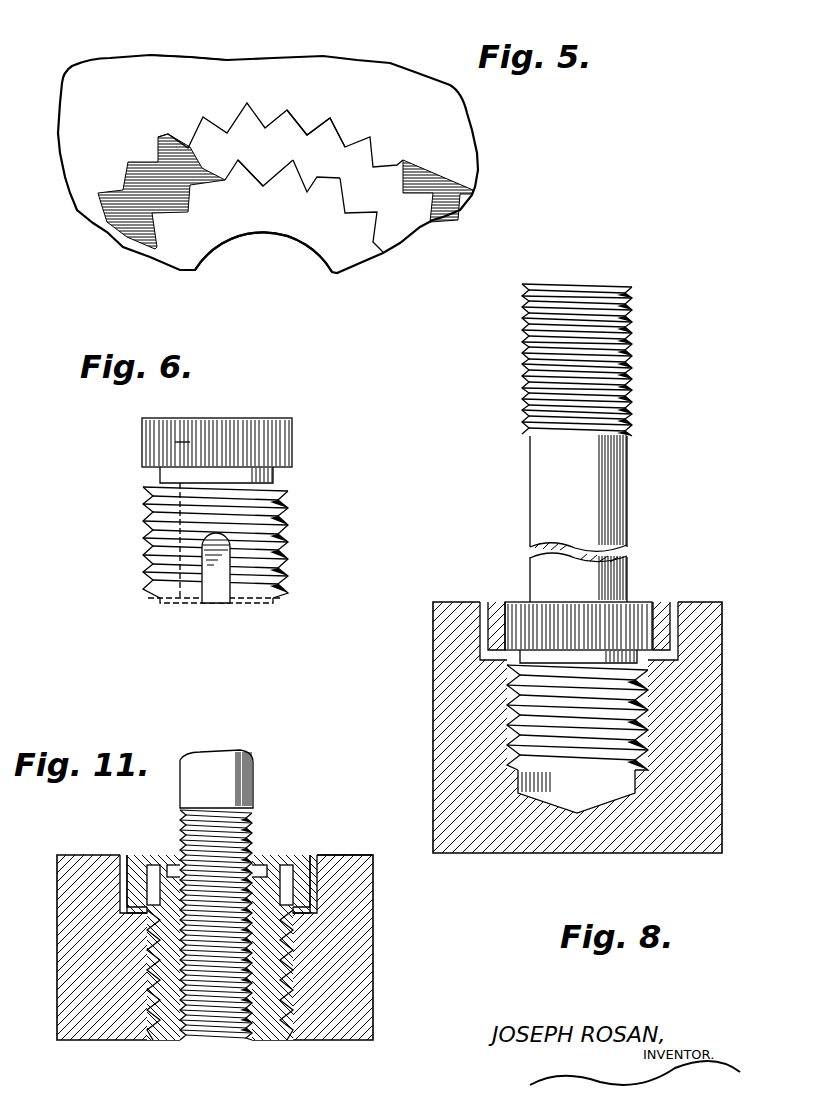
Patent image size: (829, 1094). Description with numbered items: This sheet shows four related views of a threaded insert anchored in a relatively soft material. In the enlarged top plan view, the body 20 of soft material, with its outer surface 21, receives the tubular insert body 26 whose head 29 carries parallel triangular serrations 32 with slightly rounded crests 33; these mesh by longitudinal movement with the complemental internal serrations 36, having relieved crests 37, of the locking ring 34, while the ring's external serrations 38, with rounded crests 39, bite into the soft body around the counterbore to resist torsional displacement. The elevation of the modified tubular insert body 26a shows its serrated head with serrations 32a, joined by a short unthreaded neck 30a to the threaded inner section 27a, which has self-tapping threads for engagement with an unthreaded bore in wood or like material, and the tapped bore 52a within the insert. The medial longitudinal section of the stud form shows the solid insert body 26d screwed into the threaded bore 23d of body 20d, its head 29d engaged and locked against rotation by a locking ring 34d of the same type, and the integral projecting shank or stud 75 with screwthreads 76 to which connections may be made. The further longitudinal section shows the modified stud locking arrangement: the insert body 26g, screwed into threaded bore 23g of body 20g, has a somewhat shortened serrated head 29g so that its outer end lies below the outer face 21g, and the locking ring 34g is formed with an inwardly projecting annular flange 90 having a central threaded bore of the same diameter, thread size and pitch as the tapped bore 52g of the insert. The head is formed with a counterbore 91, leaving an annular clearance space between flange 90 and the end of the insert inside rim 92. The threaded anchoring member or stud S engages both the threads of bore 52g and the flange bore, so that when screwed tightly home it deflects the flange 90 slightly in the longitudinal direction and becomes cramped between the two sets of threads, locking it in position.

In FIG. 5, the body of relatively soft material 20 is at (118, 36).
In FIG. 5, the outer surface 21 is at (182, 62).
In FIG. 5, the relieved crests of external serrations 39 is at (204, 117).
In FIG. 5, the external serrations 38 is at (327, 122).
In FIG. 5, the locking ring 34 is at (402, 162).
In FIG. 5, the serrations on head 32 is at (283, 165).
In FIG. 5, the relieved crests of head serrations 33 is at (289, 166).
In FIG. 5, the relieved crests of ring bore serrations 37 is at (268, 186).
In FIG. 5, the internal serrations of locking ring 36 is at (345, 178).
In FIG. 5, the head of insert body 29 is at (210, 245).
In FIG. 6, the head of insert body 29 is at (293, 436).
In FIG. 5, the insert body 26 is at (300, 250).
In FIG. 6, the serrations on head of modified insert 32a is at (190, 447).
In FIG. 6, the neck or thread-relief portion 30a is at (277, 475).
In FIG. 6, the threaded inner section 27a is at (157, 504).
In FIG. 6, the modified tubular insert body 26a is at (284, 546).
In FIG. 6, the tapped bore of insert body 52a is at (184, 606).
In FIG. 8, the screwthreads of stud 76 is at (628, 382).
In FIG. 8, the shank or stud 75 is at (628, 482).
In FIG. 8, the locking ring 34d is at (499, 600).
In FIG. 8, the head of insert body 29d is at (632, 610).
In FIG. 8, the body 20d is at (446, 660).
In FIG. 8, the solid insert body 26d is at (501, 716).
In FIG. 8, the screwthreaded bore 23d is at (648, 738).
In FIG. 11, the threaded anchoring member or stud S is at (253, 776).
In FIG. 11, the inwardly projecting annular flange portion 90 is at (175, 850).
In FIG. 11, the rim 92 is at (153, 857).
In FIG. 11, the locking ring 34g is at (130, 855).
In FIG. 11, the counterbore 91 is at (257, 873).
In FIG. 11, the serrated head of insert body 29g is at (288, 870).
In FIG. 11, the outer face of body 21g is at (348, 855).
In FIG. 11, the body 20g is at (358, 938).
In FIG. 11, the insert body 26g is at (151, 963).
In FIG. 11, the screwthreaded bore 23g is at (283, 978).
In FIG. 11, the tapped bore 52g is at (241, 1042).